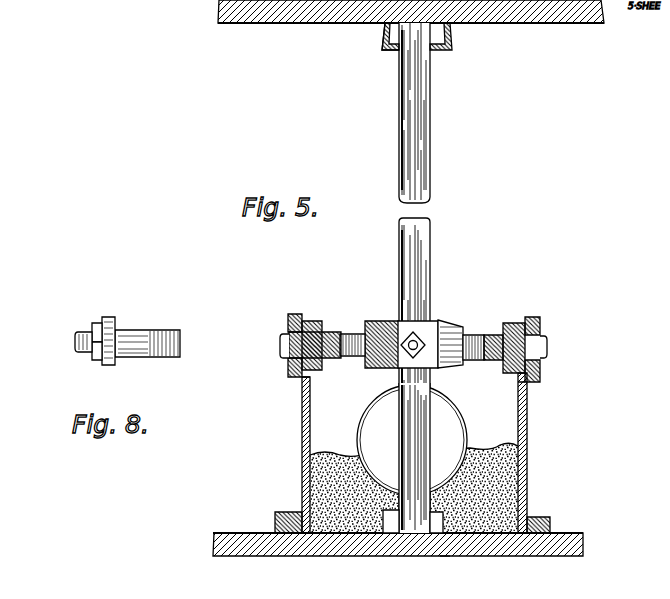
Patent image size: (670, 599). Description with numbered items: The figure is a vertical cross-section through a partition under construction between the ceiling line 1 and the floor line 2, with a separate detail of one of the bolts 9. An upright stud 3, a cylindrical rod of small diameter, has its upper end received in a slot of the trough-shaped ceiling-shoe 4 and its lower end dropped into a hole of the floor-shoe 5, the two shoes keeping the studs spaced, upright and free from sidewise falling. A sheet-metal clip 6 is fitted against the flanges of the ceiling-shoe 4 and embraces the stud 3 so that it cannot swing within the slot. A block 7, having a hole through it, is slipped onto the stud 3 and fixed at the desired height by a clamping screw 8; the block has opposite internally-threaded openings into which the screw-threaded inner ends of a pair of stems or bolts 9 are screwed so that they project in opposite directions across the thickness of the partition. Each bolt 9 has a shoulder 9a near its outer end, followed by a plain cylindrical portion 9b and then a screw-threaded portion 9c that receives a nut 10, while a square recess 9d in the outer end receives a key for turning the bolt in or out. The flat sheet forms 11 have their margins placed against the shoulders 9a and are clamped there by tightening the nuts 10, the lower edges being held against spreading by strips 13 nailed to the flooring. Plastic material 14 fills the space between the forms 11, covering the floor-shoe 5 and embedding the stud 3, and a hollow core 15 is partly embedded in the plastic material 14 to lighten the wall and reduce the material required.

In FIG. 5, the ceiling line 1 is at (564, 23).
In FIG. 5, the floor line 2 is at (568, 540).
In FIG. 5, the stud 3 is at (430, 142).
In FIG. 5, the ceiling-shoe 4 is at (450, 36).
In FIG. 5, the floor-shoe 5 is at (445, 556).
In FIG. 5, the clip 6 is at (384, 35).
In FIG. 5, the block 7 is at (440, 324).
In FIG. 5, the clamping screw 8 is at (408, 338).
In FIG. 5, the stem or bolt 9 is at (336, 336).
In FIG. 8, the stem or bolt 9 is at (137, 328).
In FIG. 5, the shoulder 9a is at (306, 318).
In FIG. 8, the shoulder 9a is at (106, 316).
In FIG. 5, the plain cylindrical portion 9b is at (288, 326).
In FIG. 8, the plain cylindrical portion 9b is at (92, 330).
In FIG. 5, the screw-threaded portion 9c is at (292, 372).
In FIG. 8, the screw-threaded portion 9c is at (94, 354).
In FIG. 5, the square hole or recess 9d is at (282, 346).
In FIG. 8, the square hole or recess 9d is at (76, 342).
In FIG. 5, the nut 10 is at (294, 382).
In FIG. 5, the form 11 is at (302, 432).
In FIG. 5, the strip 13 is at (276, 514).
In FIG. 5, the plastic material 14 is at (495, 478).
In FIG. 5, the hollow form or core 15 is at (360, 412).